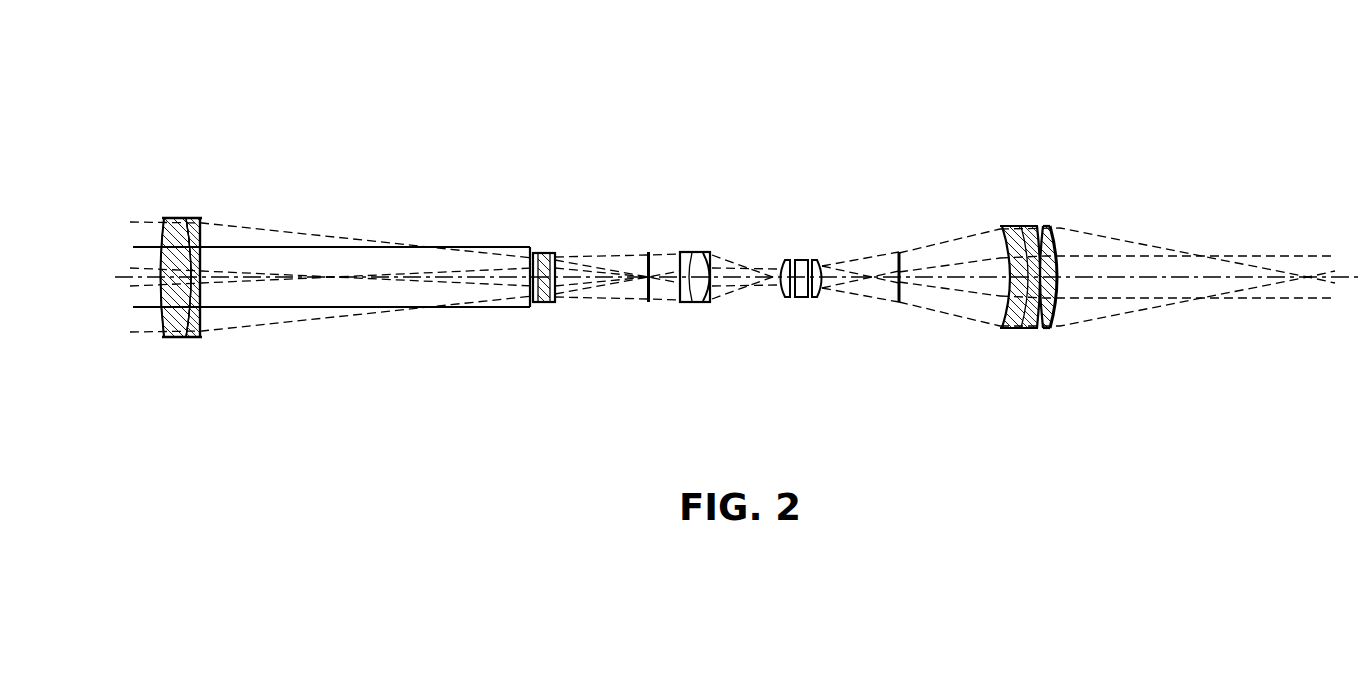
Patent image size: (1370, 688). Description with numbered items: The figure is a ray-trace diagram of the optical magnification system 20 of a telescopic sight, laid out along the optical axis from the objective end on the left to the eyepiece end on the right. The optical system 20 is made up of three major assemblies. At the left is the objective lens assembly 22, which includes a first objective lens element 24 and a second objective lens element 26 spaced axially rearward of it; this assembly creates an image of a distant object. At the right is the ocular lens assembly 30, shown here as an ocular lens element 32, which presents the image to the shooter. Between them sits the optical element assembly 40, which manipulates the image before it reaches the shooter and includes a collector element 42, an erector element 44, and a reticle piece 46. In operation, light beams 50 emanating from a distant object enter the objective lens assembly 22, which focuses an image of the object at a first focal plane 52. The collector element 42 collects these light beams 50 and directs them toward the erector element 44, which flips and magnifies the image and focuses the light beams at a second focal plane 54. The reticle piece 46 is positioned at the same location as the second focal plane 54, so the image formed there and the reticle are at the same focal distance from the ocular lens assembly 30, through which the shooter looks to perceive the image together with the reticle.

The optical magnification system 20 is at (820, 100).
The objective lens assembly 22 is at (563, 394).
The first objective lens element 24 is at (202, 343).
The second objective lens element 26 is at (558, 315).
The ocular lens assembly 30 is at (1031, 221).
The ocular lens element 32 is at (1058, 341).
The optical element assembly 40 is at (940, 394).
The collector element 42 is at (710, 315).
The erector element 44 is at (822, 315).
The reticle piece 46 is at (903, 305).
The light beams 50 is at (230, 273).
The first focal plane 52 is at (648, 251).
The second focal plane 54 is at (899, 251).